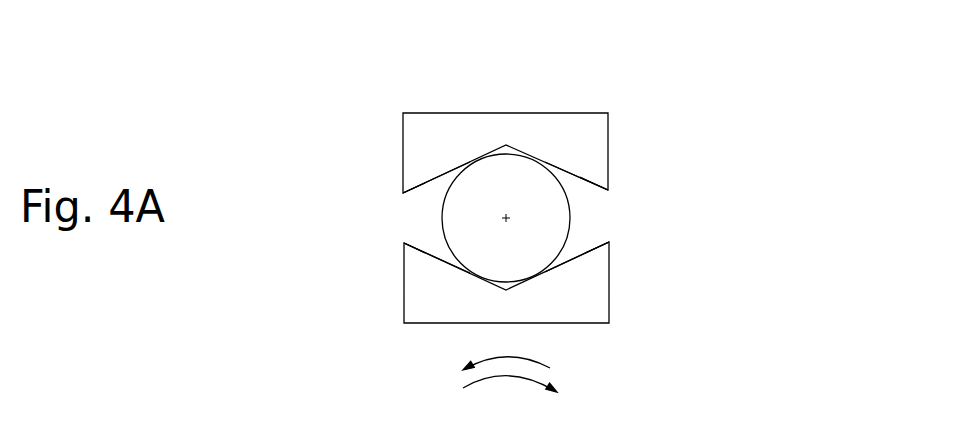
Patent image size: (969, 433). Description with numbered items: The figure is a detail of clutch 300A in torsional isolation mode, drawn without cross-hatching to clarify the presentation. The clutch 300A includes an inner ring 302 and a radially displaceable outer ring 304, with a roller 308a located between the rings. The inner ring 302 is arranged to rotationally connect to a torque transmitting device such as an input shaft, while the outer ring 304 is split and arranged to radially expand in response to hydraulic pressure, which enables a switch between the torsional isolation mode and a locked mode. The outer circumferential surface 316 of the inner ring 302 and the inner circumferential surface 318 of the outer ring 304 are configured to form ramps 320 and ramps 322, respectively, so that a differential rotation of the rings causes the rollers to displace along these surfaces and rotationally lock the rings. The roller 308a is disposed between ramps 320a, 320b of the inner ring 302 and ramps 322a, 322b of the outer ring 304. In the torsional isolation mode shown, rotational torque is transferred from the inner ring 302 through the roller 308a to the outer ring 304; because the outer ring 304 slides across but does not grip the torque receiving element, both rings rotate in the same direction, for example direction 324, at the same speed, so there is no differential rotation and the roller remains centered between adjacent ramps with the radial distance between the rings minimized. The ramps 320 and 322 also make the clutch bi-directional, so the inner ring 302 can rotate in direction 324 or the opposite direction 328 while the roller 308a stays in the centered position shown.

The clutch 300A is at (689, 88).
The inner ring 302 is at (438, 324).
The radially displaceable outer ring 304 is at (432, 114).
The roller 308a is at (519, 188).
The outer circumferential surface 316 is at (599, 231).
The inner circumferential surface 318 is at (415, 203).
The ramps 320 is at (408, 240).
The ramp 320a is at (413, 260).
The ramp 320b is at (600, 258).
The ramps 322 is at (599, 198).
The ramp 322a is at (405, 172).
The ramp 322b is at (604, 182).
The direction 324 is at (502, 374).
The direction 328 is at (518, 353).